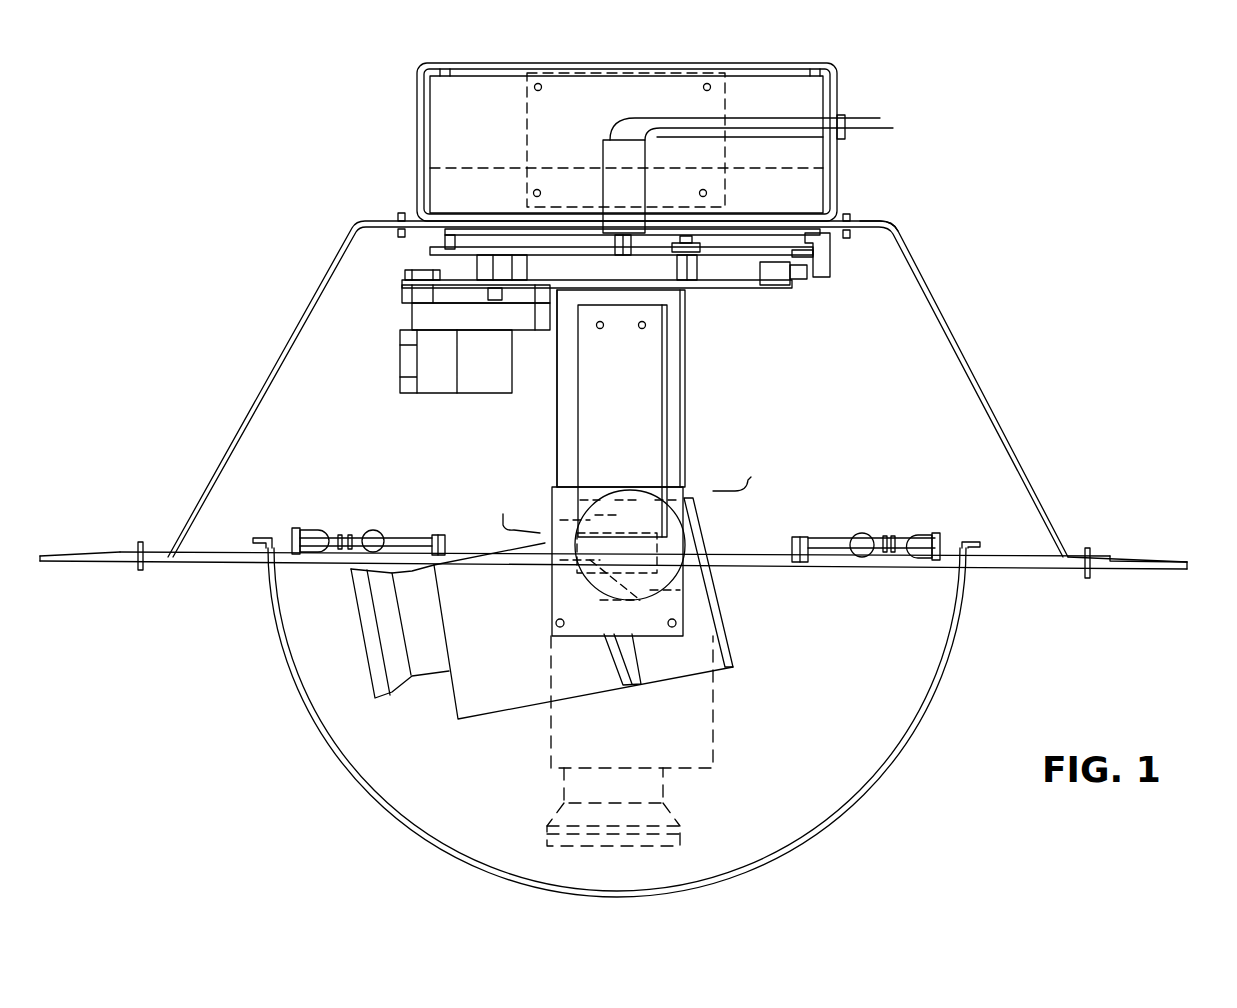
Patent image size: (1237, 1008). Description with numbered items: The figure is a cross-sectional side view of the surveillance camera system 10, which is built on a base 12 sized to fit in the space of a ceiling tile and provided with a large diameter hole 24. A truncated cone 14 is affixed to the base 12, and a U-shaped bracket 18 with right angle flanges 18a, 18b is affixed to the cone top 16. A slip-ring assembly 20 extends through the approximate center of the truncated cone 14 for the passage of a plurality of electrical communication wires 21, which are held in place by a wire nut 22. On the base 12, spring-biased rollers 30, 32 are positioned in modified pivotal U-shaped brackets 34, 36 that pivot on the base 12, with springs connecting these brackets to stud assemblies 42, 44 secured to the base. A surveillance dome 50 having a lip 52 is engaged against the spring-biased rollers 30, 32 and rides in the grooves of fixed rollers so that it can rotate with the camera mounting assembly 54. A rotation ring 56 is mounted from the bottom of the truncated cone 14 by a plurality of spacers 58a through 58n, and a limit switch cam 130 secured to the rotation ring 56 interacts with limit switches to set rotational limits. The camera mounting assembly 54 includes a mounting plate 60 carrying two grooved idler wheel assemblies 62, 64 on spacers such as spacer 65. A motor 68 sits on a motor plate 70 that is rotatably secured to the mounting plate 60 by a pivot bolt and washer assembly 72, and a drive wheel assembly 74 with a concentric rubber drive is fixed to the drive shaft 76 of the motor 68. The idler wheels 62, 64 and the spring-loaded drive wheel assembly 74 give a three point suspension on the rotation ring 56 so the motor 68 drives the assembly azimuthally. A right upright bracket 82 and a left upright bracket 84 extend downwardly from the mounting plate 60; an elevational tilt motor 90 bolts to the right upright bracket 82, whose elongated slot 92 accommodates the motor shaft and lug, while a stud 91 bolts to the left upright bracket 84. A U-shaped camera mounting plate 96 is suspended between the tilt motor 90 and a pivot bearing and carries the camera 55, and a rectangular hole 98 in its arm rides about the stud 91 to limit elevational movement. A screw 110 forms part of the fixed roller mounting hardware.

The surveillance camera system 10 is at (965, 245).
The base 12 is at (1190, 568).
The truncated cone 14 is at (1047, 522).
The cone top 16 is at (882, 226).
The U-shaped bracket 18 is at (786, 63).
The right angle flange 18a is at (398, 218).
The right angle flange 18b is at (848, 218).
The slip-ring assembly 20 is at (646, 153).
The electrical communication wires 21 is at (745, 118).
The wire nut 22 is at (843, 118).
The large diameter hole 24 is at (980, 567).
The spring-biased roller 30 is at (907, 535).
The spring-biased roller 32 is at (330, 532).
The modified pivotal U-shaped bracket 34 is at (862, 533).
The modified pivotal U-shaped bracket 36 is at (373, 530).
The stud assembly 42 is at (797, 537).
The stud assembly 44 is at (440, 535).
The surveillance dome 50 is at (915, 717).
The lip 52 is at (262, 540).
The camera mounting assembly 54 is at (765, 621).
The camera 55 is at (708, 737).
The rotation ring 56 is at (430, 251).
The spacer 58a is at (440, 236).
The spacer 58n is at (830, 240).
The mounting plate 60 is at (735, 290).
The grooved idler wheel assembly 62 is at (700, 245).
The grooved idler wheel assembly 64 is at (686, 243).
The spacer 65 is at (697, 272).
The motor 68 is at (490, 390).
The motor plate 70 is at (440, 300).
The pivot bolt and washer assembly 72 is at (405, 275).
The drive wheel assembly 74 is at (527, 265).
The drive shaft 76 is at (490, 300).
The right upright bracket 82 is at (557, 423).
The left upright bracket 84 is at (557, 460).
The elevational tilt motor 90 is at (710, 518).
The stud 91 is at (538, 569).
The elongated slot 92 is at (604, 636).
The U-shaped camera mounting plate 96 is at (730, 488).
The rectangular hole 98 is at (645, 487).
The screw 110 is at (583, 386).
The limit switch cam 130 is at (830, 270).